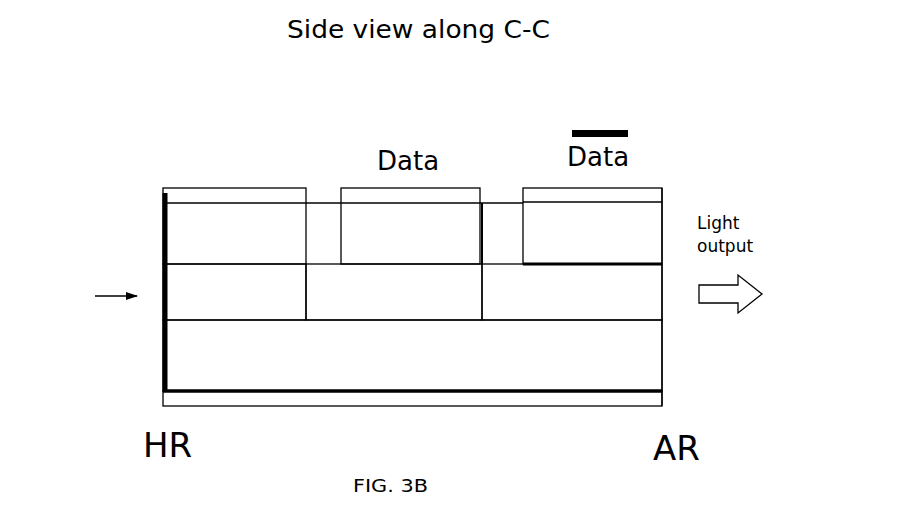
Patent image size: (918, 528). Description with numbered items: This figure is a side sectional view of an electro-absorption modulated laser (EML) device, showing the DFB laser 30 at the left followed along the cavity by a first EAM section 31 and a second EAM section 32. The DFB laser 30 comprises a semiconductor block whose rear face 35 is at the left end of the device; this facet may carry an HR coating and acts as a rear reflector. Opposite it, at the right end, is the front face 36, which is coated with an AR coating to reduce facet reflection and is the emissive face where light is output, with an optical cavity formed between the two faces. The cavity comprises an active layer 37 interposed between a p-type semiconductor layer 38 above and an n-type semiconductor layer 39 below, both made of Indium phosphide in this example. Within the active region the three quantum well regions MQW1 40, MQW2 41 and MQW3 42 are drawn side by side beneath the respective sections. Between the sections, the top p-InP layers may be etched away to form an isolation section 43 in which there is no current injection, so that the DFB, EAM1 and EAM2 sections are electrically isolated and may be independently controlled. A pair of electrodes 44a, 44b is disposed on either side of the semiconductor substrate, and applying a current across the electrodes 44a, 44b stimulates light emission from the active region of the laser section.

The DFB laser 30 is at (273, 160).
The first EAM section 31 is at (418, 120).
The second EAM section 32 is at (655, 163).
The rear face 35 is at (162, 337).
The front face 36 is at (662, 294).
The active layer 37 is at (98, 298).
The p-type semiconductor layer 38 is at (200, 220).
The n-type semiconductor layer 39 is at (273, 357).
The MQW1 40 is at (192, 303).
The MQW2 41 is at (447, 310).
The MQW3 42 is at (497, 310).
The isolation section 43 is at (318, 203).
The electrode 44a is at (243, 193).
The electrode 44b is at (328, 397).